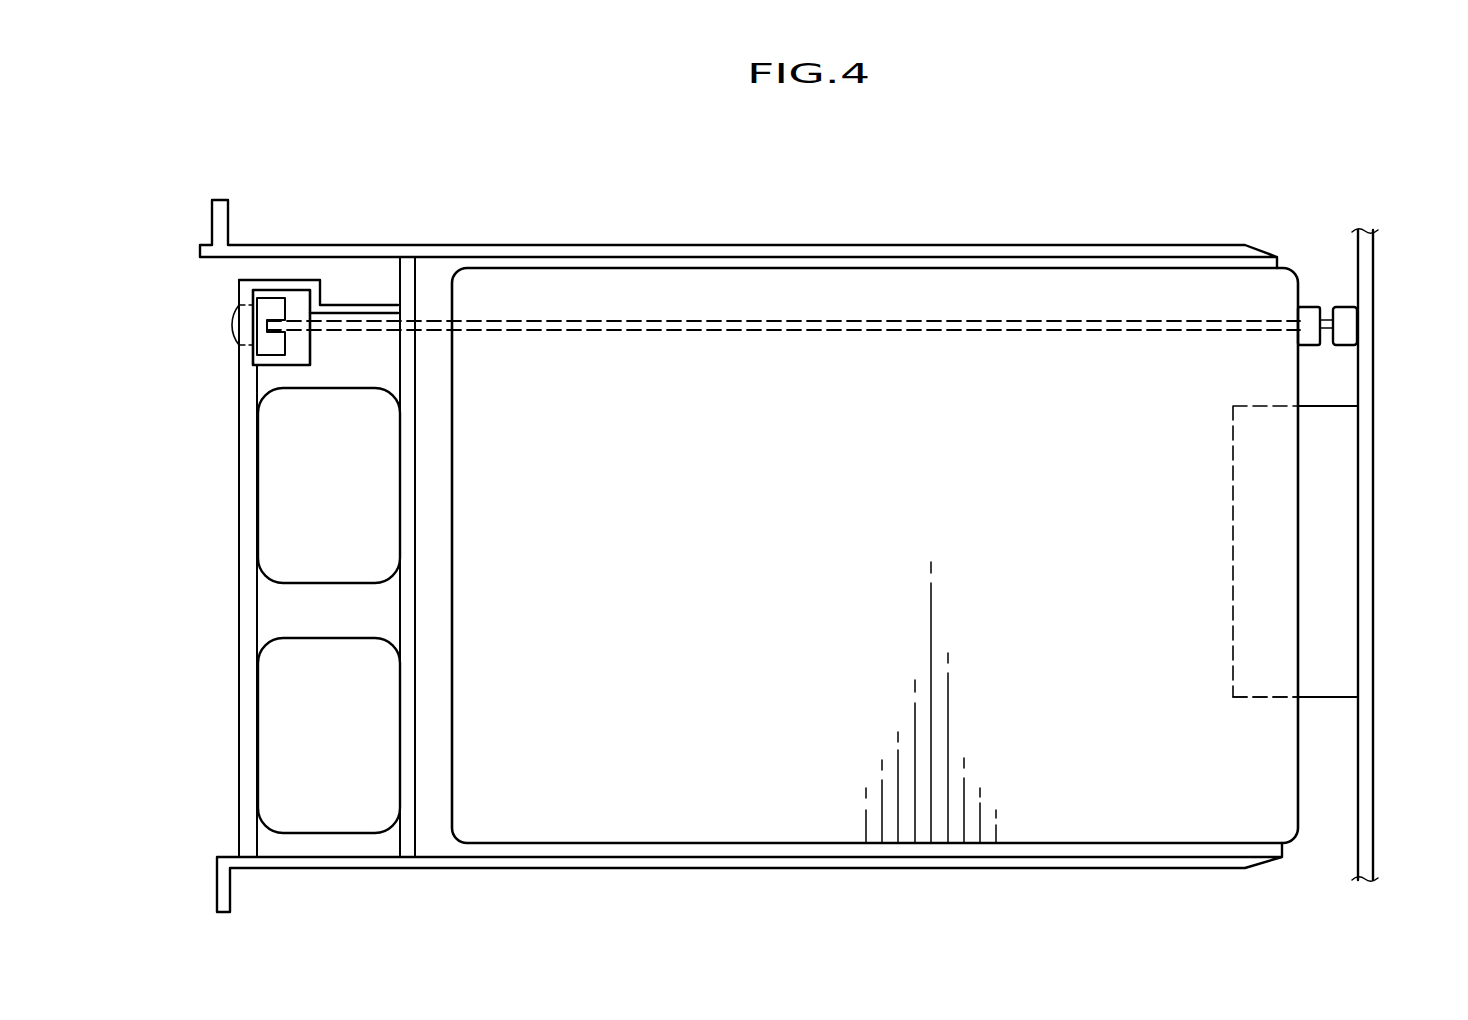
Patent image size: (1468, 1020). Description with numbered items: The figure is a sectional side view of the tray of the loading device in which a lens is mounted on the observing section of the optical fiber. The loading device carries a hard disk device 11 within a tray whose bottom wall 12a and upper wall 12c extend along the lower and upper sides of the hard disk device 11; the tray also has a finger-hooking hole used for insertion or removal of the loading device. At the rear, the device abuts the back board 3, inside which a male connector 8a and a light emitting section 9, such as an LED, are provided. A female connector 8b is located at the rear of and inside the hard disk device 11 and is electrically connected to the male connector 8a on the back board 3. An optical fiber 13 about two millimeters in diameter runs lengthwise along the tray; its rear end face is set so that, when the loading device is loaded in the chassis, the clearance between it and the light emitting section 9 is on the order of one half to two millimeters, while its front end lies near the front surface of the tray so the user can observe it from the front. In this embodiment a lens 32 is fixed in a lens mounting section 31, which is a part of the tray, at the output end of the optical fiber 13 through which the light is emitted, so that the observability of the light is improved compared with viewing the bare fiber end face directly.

The back board 3 is at (1365, 273).
The male connector 8a is at (1350, 515).
The female connector 8b is at (1250, 698).
The light emitting section 9 is at (1348, 328).
The hard disk device 11 is at (662, 830).
The bottom wall 12a is at (872, 870).
The upper wall 12c is at (1105, 245).
The optical fiber 13 is at (952, 318).
The lens mounting section 31 is at (313, 343).
The lens 32 is at (232, 325).